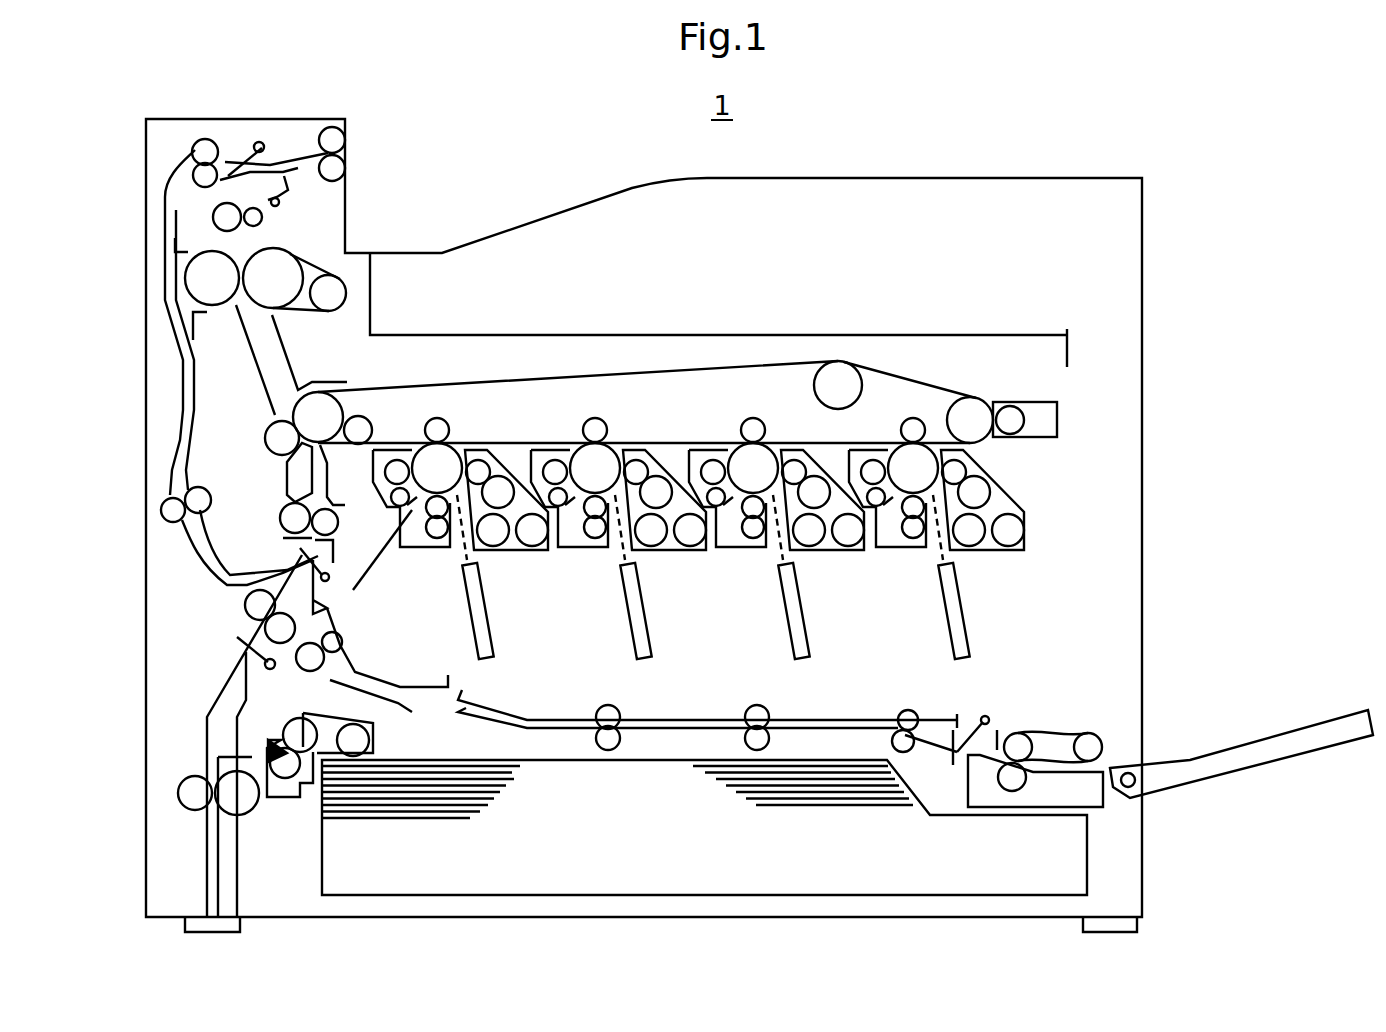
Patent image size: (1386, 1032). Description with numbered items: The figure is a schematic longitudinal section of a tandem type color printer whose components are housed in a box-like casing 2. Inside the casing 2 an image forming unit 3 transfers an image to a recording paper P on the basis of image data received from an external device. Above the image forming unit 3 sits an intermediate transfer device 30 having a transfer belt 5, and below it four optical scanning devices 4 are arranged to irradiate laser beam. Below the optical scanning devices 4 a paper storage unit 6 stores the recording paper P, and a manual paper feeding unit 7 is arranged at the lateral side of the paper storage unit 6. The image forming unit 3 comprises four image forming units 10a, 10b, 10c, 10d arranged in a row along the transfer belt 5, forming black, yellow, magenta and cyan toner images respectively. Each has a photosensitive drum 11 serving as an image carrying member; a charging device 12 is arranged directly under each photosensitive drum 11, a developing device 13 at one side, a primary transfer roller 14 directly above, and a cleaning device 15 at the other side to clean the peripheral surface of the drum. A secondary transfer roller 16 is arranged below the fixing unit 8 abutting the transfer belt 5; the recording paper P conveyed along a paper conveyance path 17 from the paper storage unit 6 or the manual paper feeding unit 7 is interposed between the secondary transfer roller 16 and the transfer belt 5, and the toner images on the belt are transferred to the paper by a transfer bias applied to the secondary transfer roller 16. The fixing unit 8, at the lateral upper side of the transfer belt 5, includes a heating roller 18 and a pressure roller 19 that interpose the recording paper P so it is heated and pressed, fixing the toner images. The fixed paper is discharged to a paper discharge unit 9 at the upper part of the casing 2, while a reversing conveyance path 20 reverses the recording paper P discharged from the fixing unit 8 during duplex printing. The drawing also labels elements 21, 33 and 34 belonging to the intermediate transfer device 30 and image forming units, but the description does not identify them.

The casing 2 is at (1058, 177).
The image forming unit 3 is at (1040, 474).
The optical scanning device 4 is at (484, 660).
The transfer belt 5 is at (660, 367).
The paper storage unit 6 is at (322, 868).
The manual paper feeding unit 7 is at (1290, 732).
The fixing unit 8 is at (170, 268).
The paper discharge unit 9 is at (545, 217).
The image forming unit 10a is at (457, 428).
The image forming unit 10b is at (573, 421).
The image forming unit 10c is at (727, 423).
The image forming unit 10d is at (890, 424).
The photosensitive drum 11 is at (452, 499).
The charging device 12 is at (437, 544).
The developing device 13 is at (492, 559).
The primary transfer roller 14 is at (430, 418).
The cleaning device 15 is at (391, 446).
The secondary transfer roller 16 is at (265, 438).
The paper conveyance path 17 is at (222, 642).
The heating roller 18 is at (292, 258).
The pressure roller 19 is at (184, 287).
The reversing conveyance path 20 is at (168, 422).
The exposure device 21 is at (390, 562).
The intermediate transfer device 30 is at (491, 378).
The tension roller 33 is at (353, 408).
The belt cleaning device 34 is at (985, 400).
The recording paper P is at (818, 775).